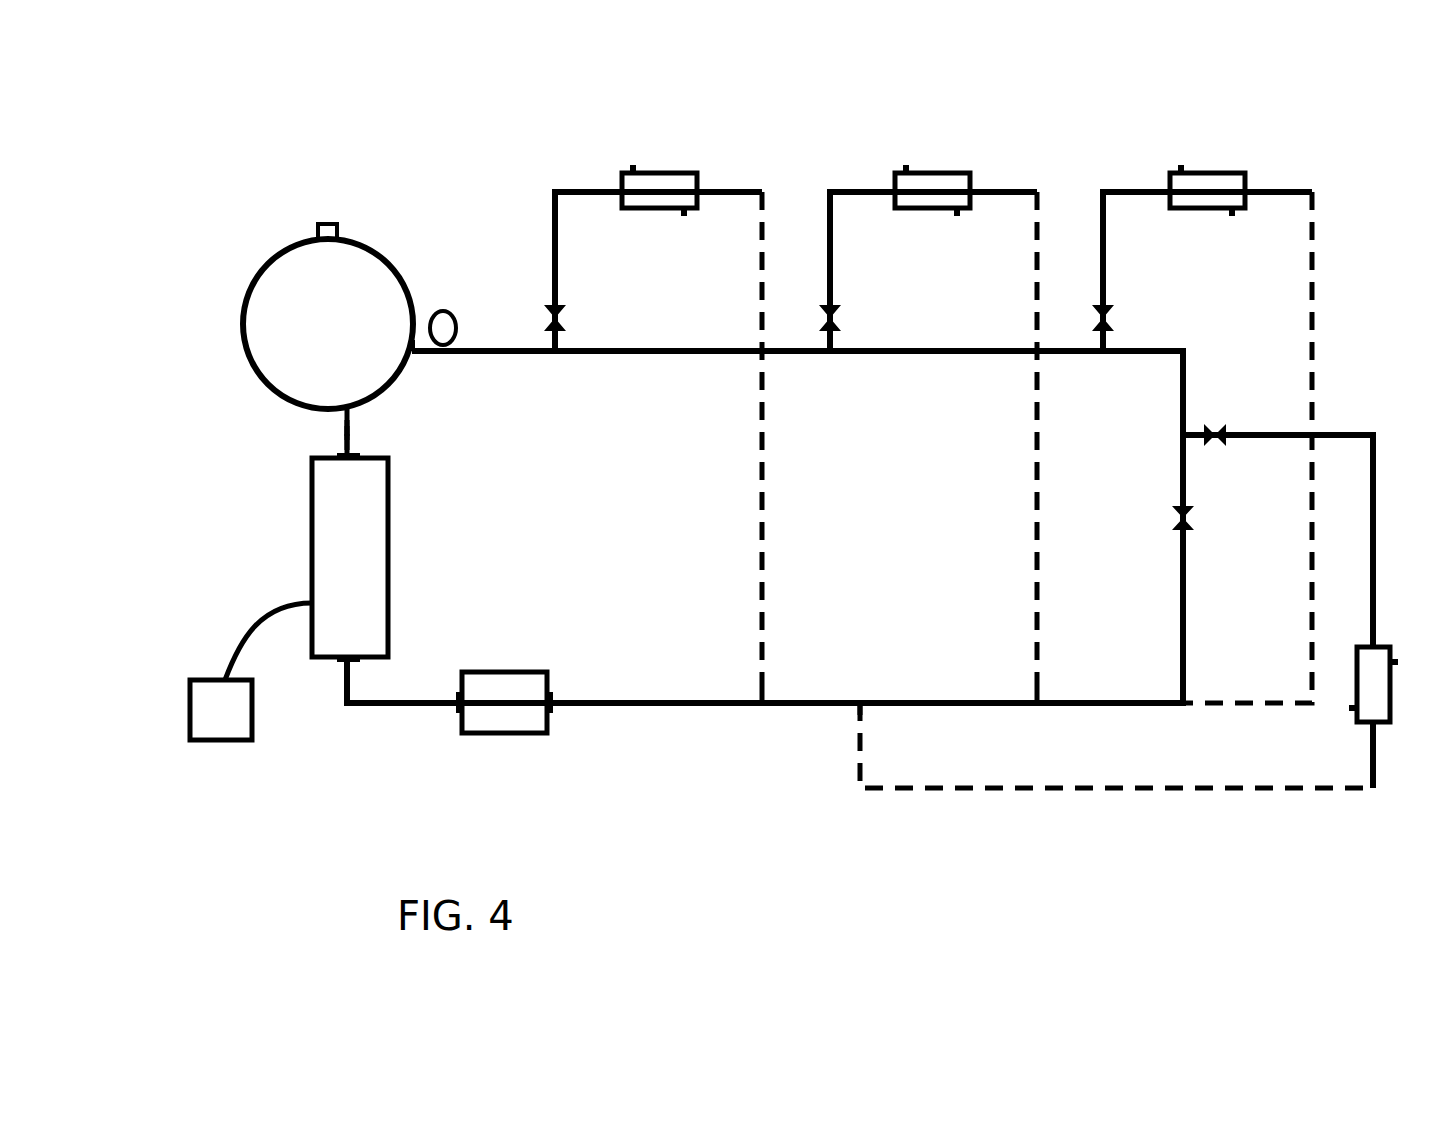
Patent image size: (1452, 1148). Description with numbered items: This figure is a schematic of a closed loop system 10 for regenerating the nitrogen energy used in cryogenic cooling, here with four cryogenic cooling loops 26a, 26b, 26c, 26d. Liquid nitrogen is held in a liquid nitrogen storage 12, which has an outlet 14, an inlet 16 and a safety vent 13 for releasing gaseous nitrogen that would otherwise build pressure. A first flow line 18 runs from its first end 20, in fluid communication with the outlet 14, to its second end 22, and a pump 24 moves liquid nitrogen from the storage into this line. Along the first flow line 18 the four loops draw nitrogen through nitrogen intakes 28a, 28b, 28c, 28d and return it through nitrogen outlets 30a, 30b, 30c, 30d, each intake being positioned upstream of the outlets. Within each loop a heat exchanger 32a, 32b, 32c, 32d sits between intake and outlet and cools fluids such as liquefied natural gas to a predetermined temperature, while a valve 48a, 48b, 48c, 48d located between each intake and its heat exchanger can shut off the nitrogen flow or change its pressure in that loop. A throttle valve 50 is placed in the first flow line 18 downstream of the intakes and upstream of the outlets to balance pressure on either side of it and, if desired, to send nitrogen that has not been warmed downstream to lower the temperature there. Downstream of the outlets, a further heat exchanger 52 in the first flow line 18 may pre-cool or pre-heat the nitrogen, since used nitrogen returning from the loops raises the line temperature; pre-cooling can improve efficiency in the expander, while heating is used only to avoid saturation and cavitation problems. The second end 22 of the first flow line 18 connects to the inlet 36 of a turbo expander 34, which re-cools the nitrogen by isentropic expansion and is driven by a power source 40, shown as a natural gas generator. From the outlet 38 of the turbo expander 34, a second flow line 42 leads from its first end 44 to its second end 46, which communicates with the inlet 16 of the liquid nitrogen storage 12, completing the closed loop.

The system 10 is at (262, 148).
The liquid nitrogen storage 12 is at (245, 306).
The vent 13 is at (327, 224).
The outlet 14 is at (418, 343).
The inlet 16 is at (345, 425).
The first flow line 18 is at (912, 705).
The first end 20 is at (423, 343).
The second end 22 is at (345, 665).
The pump 24 is at (447, 312).
The cryogenic cooling loop 26a is at (710, 190).
The cryogenic cooling loop 26b is at (990, 190).
The cryogenic cooling loop 26c is at (1312, 250).
The cryogenic cooling loop 26d is at (1170, 790).
The nitrogen intake 28a is at (550, 347).
The nitrogen intake 28b is at (828, 345).
The nitrogen intake 28c is at (1100, 345).
The nitrogen intake 28d is at (1195, 430).
The nitrogen outlet 30a is at (760, 685).
The nitrogen outlet 30b is at (1038, 690).
The nitrogen outlet 30c is at (1193, 703).
The nitrogen outlet 30d is at (858, 712).
The heat exchanger 32a is at (670, 173).
The heat exchanger 32b is at (932, 173).
The heat exchanger 32c is at (1212, 173).
The heat exchanger 32d is at (1390, 712).
The turbo expander 34 is at (312, 592).
The inlet 36 is at (340, 657).
The outlet 38 is at (340, 455).
The power source 40 is at (190, 726).
The second flow line 42 is at (345, 432).
The first end 44 is at (345, 440).
The second end 46 is at (345, 428).
The valve 48a is at (552, 312).
The valve 48b is at (828, 312).
The valve 48c is at (1105, 312).
The valve 48d is at (1225, 430).
The throttle valve 50 is at (1190, 520).
The heat exchanger 52 is at (485, 733).